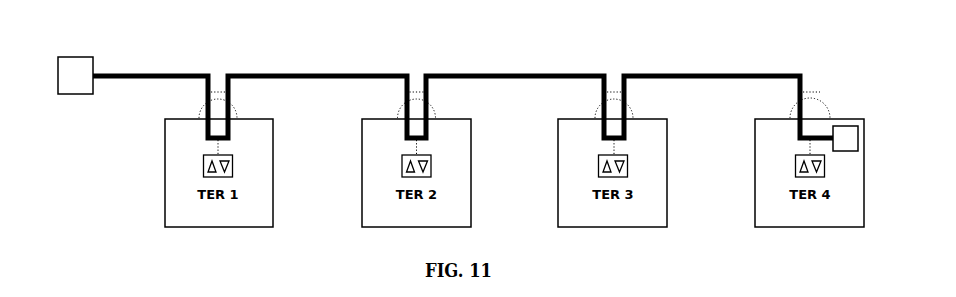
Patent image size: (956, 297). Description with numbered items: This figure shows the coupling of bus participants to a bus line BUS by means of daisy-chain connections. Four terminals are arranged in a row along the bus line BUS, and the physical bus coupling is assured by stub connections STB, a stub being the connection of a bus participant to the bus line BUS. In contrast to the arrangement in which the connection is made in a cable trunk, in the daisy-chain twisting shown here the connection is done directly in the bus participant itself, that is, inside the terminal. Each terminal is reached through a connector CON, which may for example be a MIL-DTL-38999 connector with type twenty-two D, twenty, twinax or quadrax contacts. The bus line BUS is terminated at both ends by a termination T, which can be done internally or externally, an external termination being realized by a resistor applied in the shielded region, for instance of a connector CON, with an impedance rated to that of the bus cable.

The bus line BUS is at (537, 66).
The connector CON is at (413, 81).
The stub connection STB is at (203, 146).